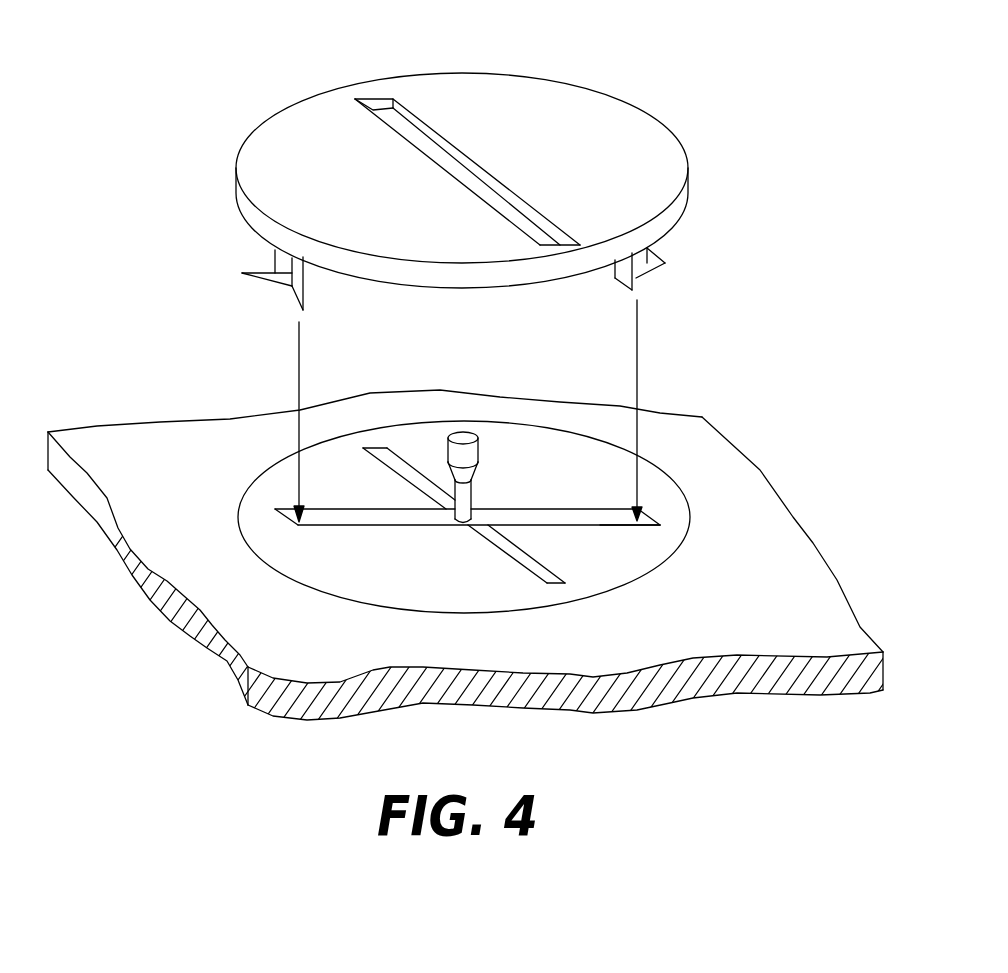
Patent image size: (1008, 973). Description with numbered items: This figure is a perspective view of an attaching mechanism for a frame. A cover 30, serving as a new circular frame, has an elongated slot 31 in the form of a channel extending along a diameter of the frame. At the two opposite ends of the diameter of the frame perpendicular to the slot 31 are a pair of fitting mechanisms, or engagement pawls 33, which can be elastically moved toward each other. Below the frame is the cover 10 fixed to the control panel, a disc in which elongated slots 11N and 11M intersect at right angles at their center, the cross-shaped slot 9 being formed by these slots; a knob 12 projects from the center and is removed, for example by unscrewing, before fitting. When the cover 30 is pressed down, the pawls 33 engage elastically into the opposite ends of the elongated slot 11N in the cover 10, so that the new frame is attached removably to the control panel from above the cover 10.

The cover 10 is at (818, 557).
The cross-shaped slot 9 is at (411, 486).
The elongated slot 11N is at (611, 524).
The elongated slot 11M is at (550, 584).
The knob 12 is at (470, 421).
The cover 30 is at (662, 150).
The elongated slot 31 is at (406, 128).
The fitting mechanisms (engagement pawls) 33 is at (281, 300).